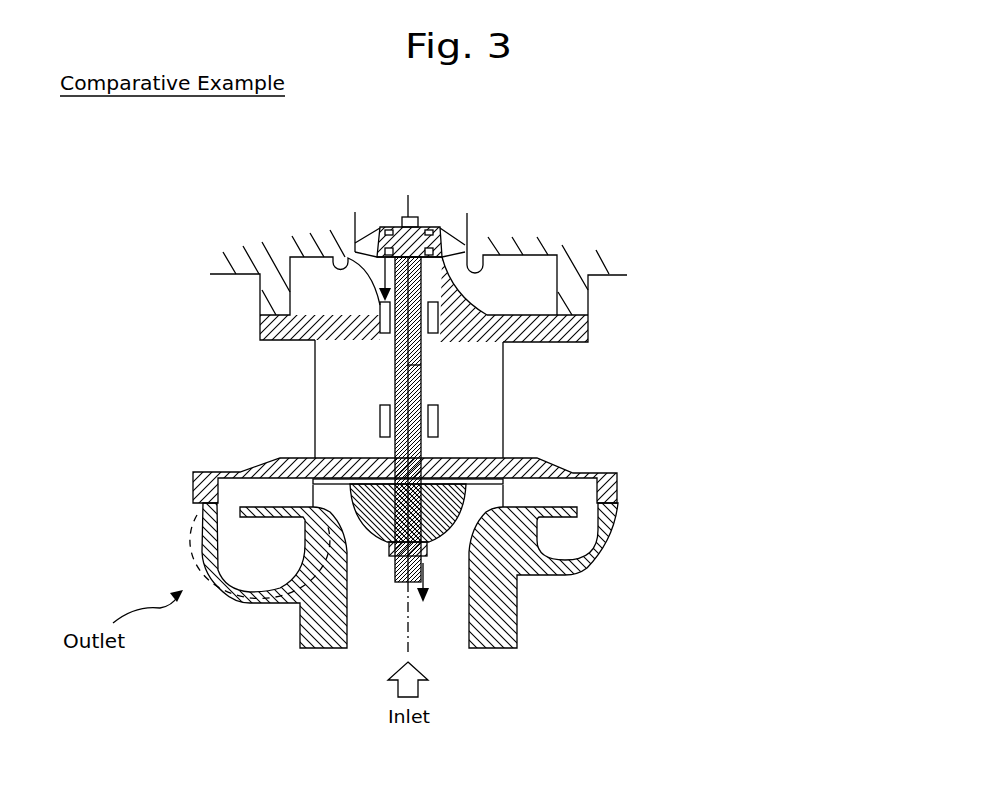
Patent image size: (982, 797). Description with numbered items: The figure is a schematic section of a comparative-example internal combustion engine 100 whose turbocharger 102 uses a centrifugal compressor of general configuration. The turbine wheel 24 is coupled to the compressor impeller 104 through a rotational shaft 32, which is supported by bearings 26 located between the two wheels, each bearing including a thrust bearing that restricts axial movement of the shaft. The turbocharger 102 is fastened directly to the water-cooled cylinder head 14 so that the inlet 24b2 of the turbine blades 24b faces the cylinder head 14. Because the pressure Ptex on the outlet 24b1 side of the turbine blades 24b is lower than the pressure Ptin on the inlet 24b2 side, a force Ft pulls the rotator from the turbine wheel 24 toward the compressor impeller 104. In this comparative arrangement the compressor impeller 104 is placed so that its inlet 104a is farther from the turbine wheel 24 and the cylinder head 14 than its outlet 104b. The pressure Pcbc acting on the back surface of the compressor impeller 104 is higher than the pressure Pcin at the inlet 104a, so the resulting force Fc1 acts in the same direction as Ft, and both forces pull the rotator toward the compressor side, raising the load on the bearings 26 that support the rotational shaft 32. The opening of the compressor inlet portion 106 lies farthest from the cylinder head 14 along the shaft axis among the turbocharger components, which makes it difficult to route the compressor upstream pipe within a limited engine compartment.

The cylinder head 14 is at (605, 265).
The turbine wheel 24 is at (381, 219).
The turbine blades 24b is at (440, 232).
The outlet of the turbine blades 24b1 is at (377, 258).
The inlet of the turbine blades 24b2 is at (355, 220).
The bearings 26 is at (380, 335).
The rotational shaft 32 is at (423, 365).
The internal combustion engine 100 is at (672, 258).
The turbocharger 102 is at (676, 500).
The compressor impeller 104 is at (483, 577).
The inlet of the compressor impeller 104a is at (362, 553).
The outlet of the compressor impeller 104b is at (307, 494).
The compressor inlet portion 106 is at (435, 630).
The force applied to the turbine wheel Ft is at (380, 262).
The force applied to the compressor impeller Fc1 is at (453, 540).
The pressure on the inlet side of the turbine blades Ptin is at (483, 172).
The pressure on the outlet side of the turbine blades Ptex is at (530, 297).
The pressure acting on the back surface of the compressor impeller Pcbc is at (490, 458).
The pressure on the inlet side of the compressor impeller Pcin is at (348, 597).